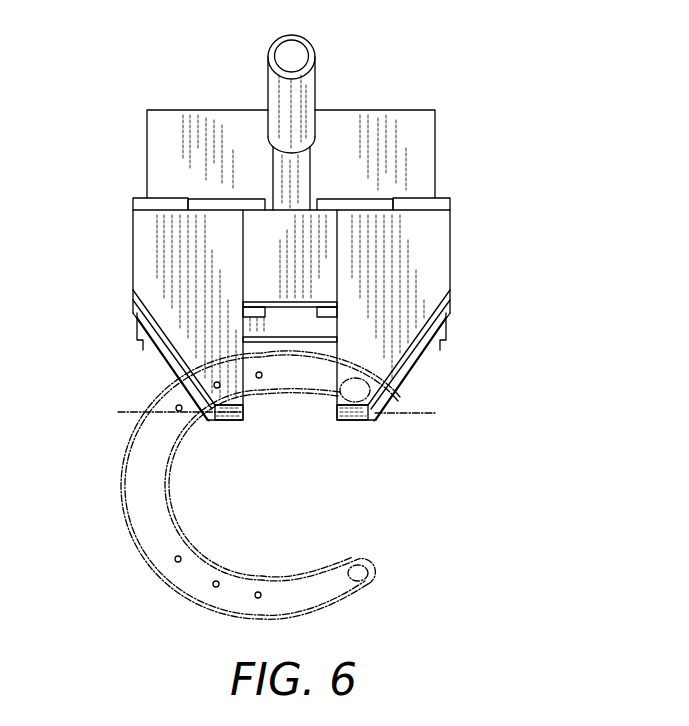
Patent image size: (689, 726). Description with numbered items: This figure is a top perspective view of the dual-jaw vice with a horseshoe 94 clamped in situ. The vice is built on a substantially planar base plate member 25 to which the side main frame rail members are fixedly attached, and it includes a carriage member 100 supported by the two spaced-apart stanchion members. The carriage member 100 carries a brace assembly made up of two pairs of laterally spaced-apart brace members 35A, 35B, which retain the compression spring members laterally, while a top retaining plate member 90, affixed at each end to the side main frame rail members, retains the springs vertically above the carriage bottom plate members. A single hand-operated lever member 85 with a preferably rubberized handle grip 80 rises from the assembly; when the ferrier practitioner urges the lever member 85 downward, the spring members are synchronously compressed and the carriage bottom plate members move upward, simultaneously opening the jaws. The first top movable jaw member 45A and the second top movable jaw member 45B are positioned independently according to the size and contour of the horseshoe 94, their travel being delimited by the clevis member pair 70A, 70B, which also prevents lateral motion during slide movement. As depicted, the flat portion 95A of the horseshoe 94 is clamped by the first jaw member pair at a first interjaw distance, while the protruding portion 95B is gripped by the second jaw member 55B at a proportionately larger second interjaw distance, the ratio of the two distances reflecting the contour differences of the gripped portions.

The handle grip 80 is at (277, 95).
The base plate member 25 is at (422, 127).
The hand-operated lever member 85 is at (280, 173).
The clevis member 70A is at (140, 202).
The clevis member 70B is at (443, 198).
The brace member pair 35A is at (188, 200).
The brace member pair 35B is at (340, 198).
The first top movable jaw member 45A is at (143, 227).
The second top movable jaw member 45B is at (438, 217).
The second jaw member 55B is at (462, 278).
The top retaining plate member 90 is at (250, 255).
The flat portion 95A is at (140, 475).
The protruding portion 95B is at (365, 388).
The horseshoe 94 is at (163, 580).
The carriage member 100 is at (488, 402).